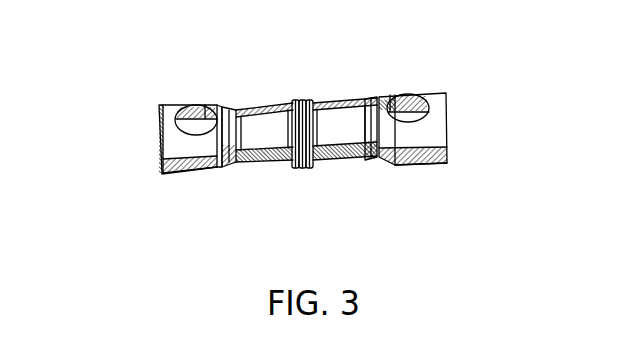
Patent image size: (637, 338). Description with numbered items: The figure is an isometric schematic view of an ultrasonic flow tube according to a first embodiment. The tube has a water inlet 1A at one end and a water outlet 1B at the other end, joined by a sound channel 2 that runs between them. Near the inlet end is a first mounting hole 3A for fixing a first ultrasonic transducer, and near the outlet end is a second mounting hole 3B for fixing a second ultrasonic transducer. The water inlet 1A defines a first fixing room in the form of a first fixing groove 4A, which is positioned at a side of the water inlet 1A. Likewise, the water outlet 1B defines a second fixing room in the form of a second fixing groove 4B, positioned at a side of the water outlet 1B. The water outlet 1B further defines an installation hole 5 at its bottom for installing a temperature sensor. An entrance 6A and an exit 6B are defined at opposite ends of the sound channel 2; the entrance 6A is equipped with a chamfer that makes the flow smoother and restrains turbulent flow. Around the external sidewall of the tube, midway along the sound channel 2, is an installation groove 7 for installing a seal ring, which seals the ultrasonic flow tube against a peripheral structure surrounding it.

The water inlet 1A is at (158, 142).
The water outlet 1B is at (448, 125).
The sound channel 2 is at (269, 130).
The first mounting hole 3A is at (193, 112).
The second mounting hole 3B is at (408, 93).
The first fixing groove 4A is at (162, 167).
The second fixing groove 4B is at (447, 148).
The installation hole 5 is at (420, 160).
The entrance 6A is at (230, 158).
The exit 6B is at (372, 142).
The installation groove 7 is at (303, 102).